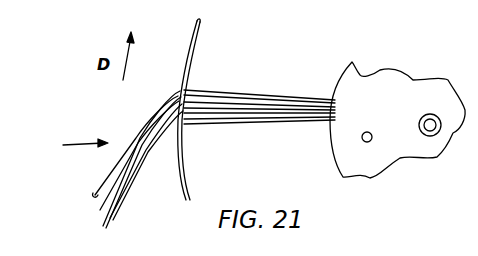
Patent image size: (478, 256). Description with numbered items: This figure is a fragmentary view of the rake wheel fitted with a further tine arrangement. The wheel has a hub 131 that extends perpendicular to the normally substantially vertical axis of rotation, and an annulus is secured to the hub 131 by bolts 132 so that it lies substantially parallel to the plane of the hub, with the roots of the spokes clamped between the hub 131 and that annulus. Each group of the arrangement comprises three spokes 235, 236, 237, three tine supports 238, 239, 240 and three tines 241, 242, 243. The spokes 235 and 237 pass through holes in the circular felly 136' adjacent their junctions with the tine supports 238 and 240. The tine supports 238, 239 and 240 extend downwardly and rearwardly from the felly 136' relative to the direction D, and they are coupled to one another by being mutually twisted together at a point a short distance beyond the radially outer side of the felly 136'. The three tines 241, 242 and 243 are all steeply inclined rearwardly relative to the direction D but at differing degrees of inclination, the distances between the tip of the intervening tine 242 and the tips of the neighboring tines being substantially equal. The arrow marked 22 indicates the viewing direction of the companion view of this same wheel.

The felly 136' is at (224, 108).
The hub 131 is at (366, 74).
The bolt 132 is at (370, 131).
The spoke 235 is at (293, 102).
The spoke 236 is at (235, 110).
The spoke 237 is at (258, 123).
The tine support 238 is at (168, 90).
The tine support 239 is at (168, 108).
The tine support 240 is at (165, 130).
The tine 241 is at (108, 218).
The tine 242 is at (100, 208).
The tine 243 is at (106, 184).
The direction arrow 22 is at (81, 135).